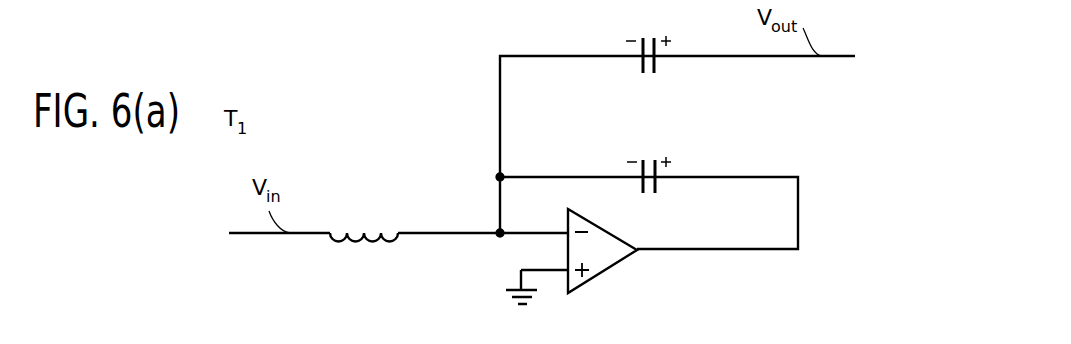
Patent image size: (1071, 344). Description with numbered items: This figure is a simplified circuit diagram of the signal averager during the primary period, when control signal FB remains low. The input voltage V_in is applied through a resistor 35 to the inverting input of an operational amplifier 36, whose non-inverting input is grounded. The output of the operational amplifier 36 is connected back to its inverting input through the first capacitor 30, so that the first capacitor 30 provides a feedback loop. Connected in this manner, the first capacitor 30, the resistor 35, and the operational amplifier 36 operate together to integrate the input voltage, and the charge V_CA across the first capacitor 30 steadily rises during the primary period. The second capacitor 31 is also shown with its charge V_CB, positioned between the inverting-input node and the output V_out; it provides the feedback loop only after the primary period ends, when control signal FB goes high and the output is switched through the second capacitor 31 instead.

The first capacitor 30 is at (660, 183).
The second capacitor 31 is at (658, 62).
The resistor 35 is at (355, 243).
The operational amplifier 36 is at (608, 273).